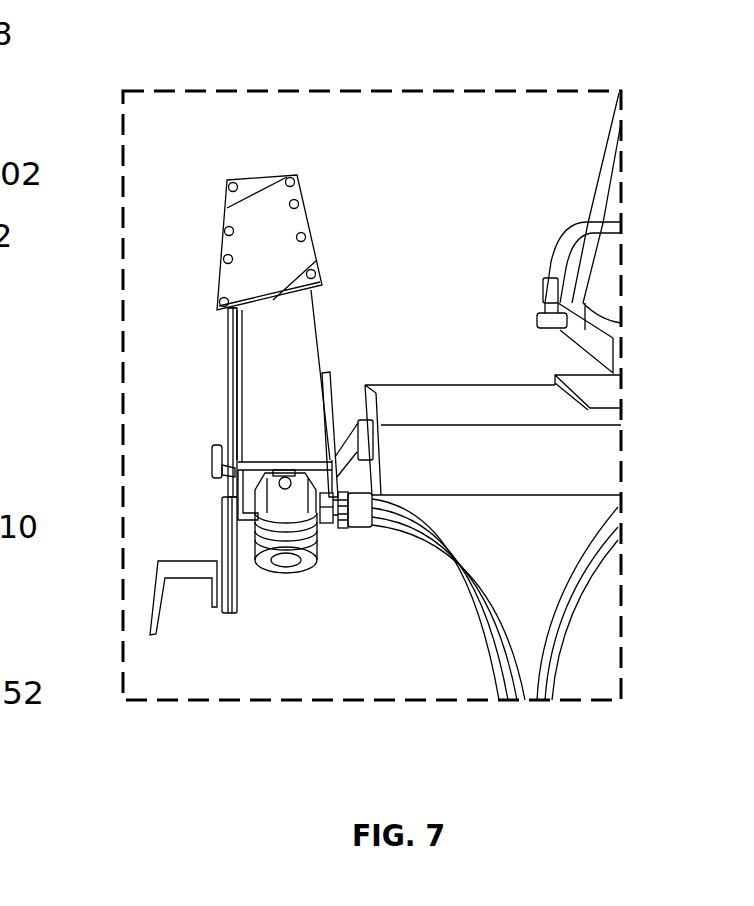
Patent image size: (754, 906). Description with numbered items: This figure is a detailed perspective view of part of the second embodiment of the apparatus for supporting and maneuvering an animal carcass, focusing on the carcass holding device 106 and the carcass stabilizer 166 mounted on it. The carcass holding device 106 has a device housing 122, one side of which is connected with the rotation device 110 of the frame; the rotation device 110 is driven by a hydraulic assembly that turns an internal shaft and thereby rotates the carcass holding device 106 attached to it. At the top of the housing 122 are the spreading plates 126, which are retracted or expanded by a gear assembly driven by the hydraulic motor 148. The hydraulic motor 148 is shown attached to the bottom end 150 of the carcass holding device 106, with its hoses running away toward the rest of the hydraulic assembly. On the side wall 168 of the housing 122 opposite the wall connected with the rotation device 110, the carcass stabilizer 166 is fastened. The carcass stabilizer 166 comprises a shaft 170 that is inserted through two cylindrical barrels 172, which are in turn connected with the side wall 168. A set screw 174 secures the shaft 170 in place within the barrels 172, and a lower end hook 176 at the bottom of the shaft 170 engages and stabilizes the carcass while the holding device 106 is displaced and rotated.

The carcass holding device 106 is at (178, 178).
The rotation device 110 is at (578, 463).
The device housing 122 is at (285, 327).
The spreading plates 126 is at (270, 217).
The hydraulic motor 148 is at (285, 562).
The bottom end 150 is at (247, 487).
The carcass stabilizer 166 is at (200, 384).
The side wall 168 is at (224, 345).
The shaft 170 is at (235, 570).
The cylindrical barrels 172 is at (235, 312).
The set screw 174 is at (211, 456).
The lower end hook 176 is at (153, 607).